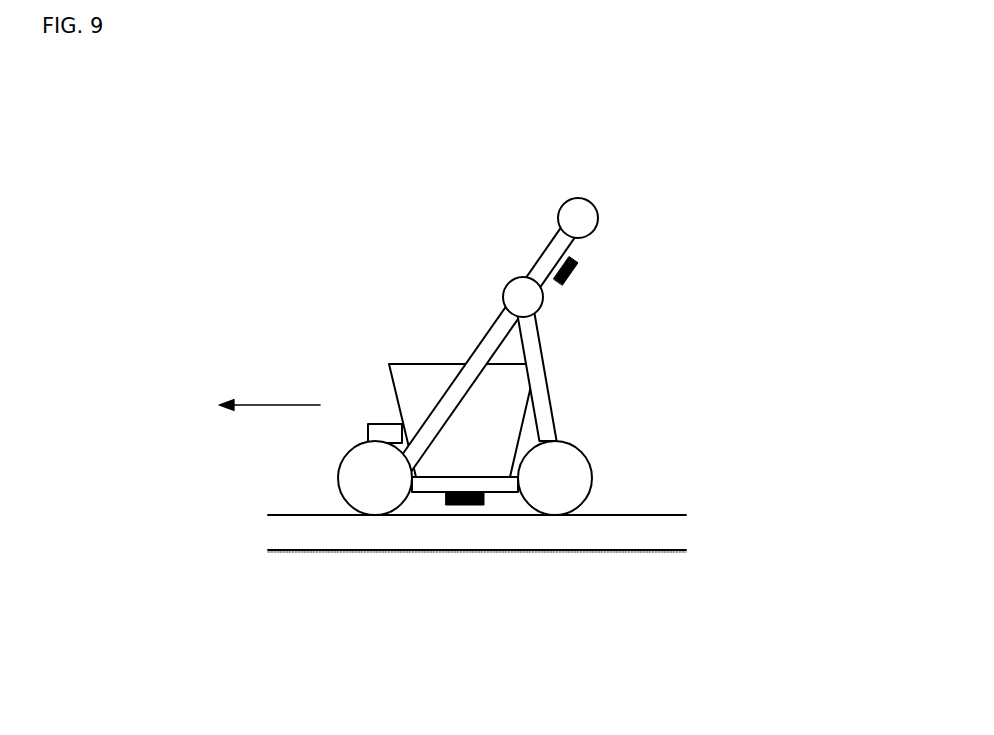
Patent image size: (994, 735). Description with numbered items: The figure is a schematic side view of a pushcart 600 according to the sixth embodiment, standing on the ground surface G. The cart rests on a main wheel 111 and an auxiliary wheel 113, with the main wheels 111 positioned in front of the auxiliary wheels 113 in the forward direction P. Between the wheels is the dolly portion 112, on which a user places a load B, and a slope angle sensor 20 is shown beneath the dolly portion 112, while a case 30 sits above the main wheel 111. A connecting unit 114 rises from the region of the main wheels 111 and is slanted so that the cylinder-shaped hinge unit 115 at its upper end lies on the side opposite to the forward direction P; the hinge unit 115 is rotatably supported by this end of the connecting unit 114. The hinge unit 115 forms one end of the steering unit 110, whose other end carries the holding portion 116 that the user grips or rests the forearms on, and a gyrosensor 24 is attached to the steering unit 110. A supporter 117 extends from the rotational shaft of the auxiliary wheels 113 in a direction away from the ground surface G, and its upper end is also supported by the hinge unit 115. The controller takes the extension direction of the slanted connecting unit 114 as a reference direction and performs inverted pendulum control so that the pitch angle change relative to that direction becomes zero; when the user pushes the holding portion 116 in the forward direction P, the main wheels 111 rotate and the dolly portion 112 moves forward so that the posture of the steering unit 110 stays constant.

The pushcart 600 is at (322, 166).
The steering unit 110 is at (550, 257).
The holding portion 116 is at (580, 213).
The gyrosensor 24 is at (576, 264).
The hinge unit 115 is at (538, 301).
The connecting unit 114 is at (485, 343).
The supporter 117 is at (540, 383).
The load B is at (413, 382).
The forward direction P is at (273, 403).
The case 30 is at (387, 429).
The main wheel 111 is at (367, 490).
The dolly portion 112 is at (427, 483).
The slope angle sensor 20 is at (467, 505).
The auxiliary wheel 113 is at (553, 490).
The ground surface G is at (622, 537).